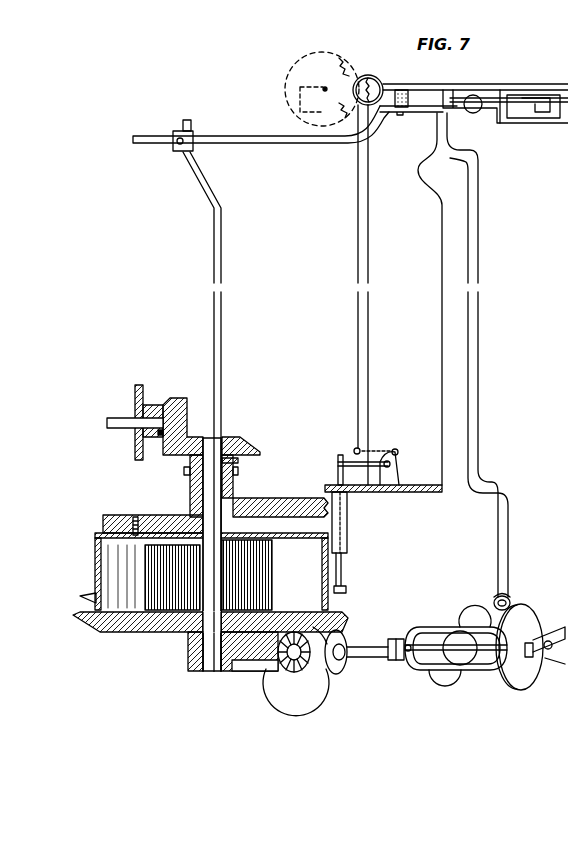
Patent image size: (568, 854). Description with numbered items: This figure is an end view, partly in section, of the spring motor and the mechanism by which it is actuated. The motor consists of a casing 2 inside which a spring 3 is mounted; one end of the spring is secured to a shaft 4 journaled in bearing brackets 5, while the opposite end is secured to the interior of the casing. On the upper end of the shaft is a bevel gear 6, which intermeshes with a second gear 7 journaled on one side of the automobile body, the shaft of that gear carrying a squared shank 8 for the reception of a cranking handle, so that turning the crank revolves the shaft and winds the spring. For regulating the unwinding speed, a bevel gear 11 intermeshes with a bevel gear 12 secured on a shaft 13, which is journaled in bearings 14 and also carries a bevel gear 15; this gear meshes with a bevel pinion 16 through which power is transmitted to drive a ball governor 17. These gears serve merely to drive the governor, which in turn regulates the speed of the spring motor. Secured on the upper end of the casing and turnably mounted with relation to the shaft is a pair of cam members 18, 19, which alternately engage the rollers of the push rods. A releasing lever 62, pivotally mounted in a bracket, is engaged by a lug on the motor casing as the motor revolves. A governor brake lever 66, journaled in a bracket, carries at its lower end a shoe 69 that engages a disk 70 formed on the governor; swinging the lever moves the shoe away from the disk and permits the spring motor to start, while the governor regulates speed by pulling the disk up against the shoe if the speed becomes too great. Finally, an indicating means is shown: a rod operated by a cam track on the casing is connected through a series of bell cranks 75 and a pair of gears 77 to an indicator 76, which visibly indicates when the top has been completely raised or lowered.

The casing 2 is at (95, 557).
The spring 3 is at (262, 572).
The shaft 4 is at (208, 668).
The bearing brackets 5 is at (233, 483).
The bevel gear 6 is at (238, 440).
The second gear 7 is at (176, 404).
The squared shank 8 is at (124, 429).
The bevel gear 11 is at (93, 618).
The bevel gear 12 is at (290, 674).
The shaft 13 is at (320, 650).
The bearings 14 is at (257, 653).
The bevel gear 15 is at (313, 671).
The bevel pinion 16 is at (338, 635).
The ball governor 17 is at (452, 675).
The cam member 18 is at (126, 516).
The cam member 19 is at (297, 491).
The releasing lever 62 is at (221, 260).
The governor brake lever 66 is at (473, 268).
The shoe 69 is at (495, 595).
The disk 70 is at (525, 613).
The bell cranks 75 is at (360, 452).
The indicator 76 is at (368, 108).
The pair of gears 77 is at (347, 74).